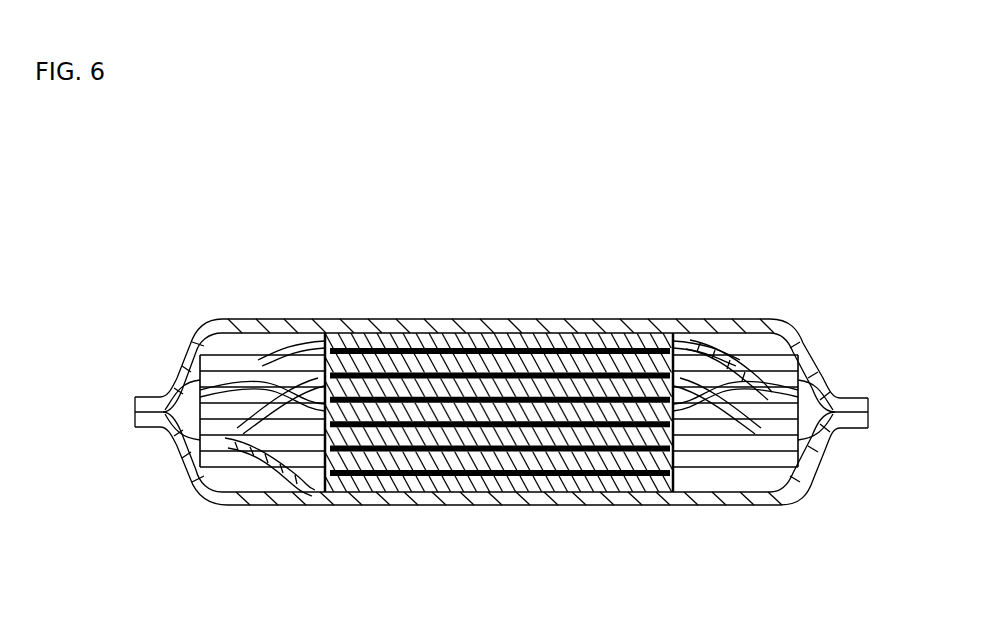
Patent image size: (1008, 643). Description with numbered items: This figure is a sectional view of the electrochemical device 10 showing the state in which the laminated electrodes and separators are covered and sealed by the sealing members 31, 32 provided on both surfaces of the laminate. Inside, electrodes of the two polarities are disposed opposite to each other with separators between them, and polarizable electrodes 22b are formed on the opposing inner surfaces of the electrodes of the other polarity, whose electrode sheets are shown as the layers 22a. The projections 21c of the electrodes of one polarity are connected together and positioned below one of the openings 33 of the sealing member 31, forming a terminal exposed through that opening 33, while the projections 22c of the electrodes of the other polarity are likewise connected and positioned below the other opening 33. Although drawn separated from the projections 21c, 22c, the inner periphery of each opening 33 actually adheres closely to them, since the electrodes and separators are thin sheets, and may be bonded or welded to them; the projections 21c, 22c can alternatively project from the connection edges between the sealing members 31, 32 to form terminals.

The electrochemical device 10 is at (735, 262).
The projections of the electrodes of one polarity 21c is at (200, 384).
The positive electrode 22a is at (400, 336).
The polarizable electrode 22b is at (505, 352).
The projections of the electrodes of the other polarity 22c is at (767, 327).
The sealing member 31 is at (675, 318).
The sealing member 32 is at (690, 508).
The opening 33 is at (501, 418).